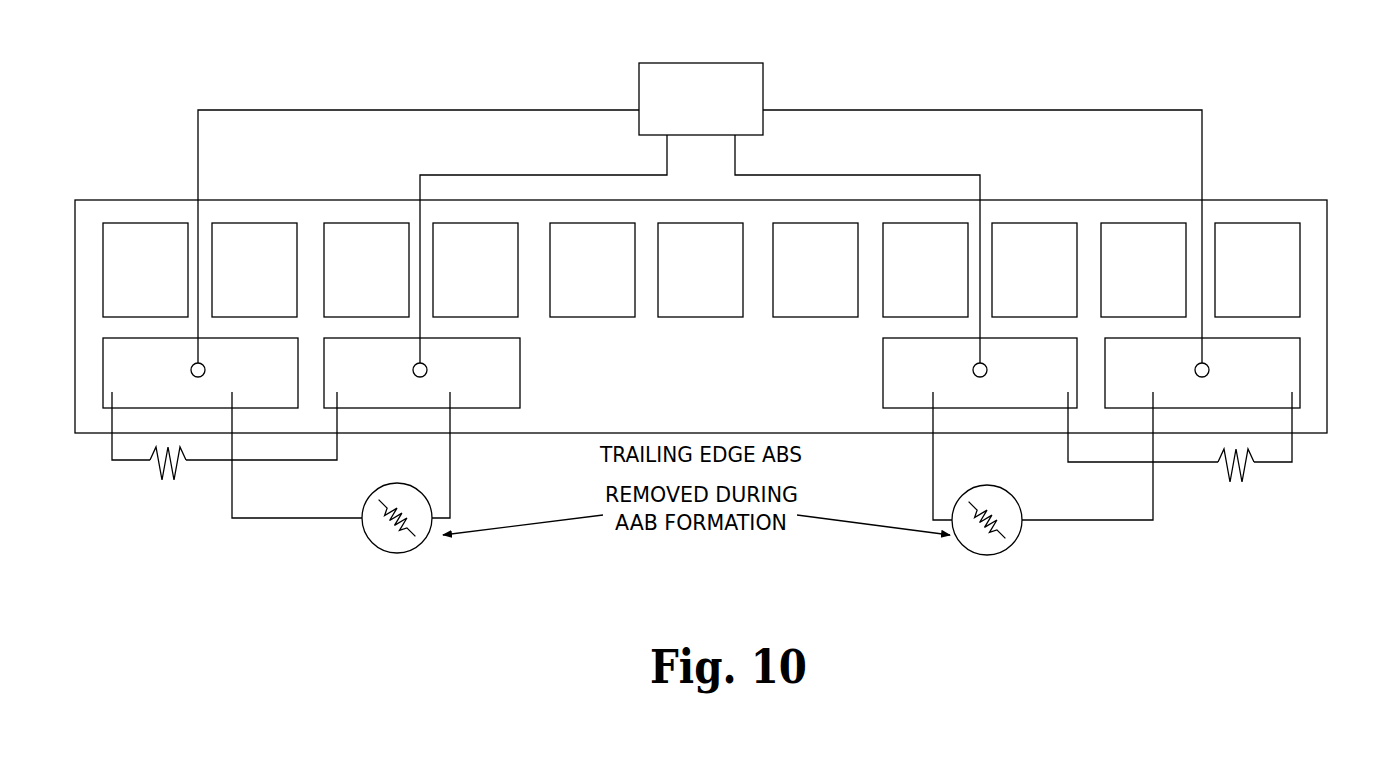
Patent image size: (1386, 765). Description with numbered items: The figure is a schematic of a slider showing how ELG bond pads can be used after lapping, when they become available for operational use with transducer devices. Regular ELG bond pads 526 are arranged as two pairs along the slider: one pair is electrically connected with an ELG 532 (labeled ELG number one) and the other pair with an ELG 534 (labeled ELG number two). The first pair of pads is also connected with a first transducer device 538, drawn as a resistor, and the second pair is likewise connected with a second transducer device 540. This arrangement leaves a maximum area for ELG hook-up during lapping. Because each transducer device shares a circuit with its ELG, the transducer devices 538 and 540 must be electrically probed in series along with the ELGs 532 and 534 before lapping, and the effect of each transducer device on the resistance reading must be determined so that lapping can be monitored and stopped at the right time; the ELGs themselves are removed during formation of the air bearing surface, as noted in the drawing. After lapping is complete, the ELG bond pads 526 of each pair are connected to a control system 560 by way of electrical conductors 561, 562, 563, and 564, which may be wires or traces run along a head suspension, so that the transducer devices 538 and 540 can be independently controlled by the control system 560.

The ELG bond pad 526 is at (112, 378).
The ELG 532 is at (367, 555).
The ELG 534 is at (1018, 558).
The first transducer device 538 is at (170, 482).
The second transducer device 540 is at (1235, 482).
The control system 560 is at (737, 92).
The electrical conductor 561 is at (347, 110).
The electrical conductor 562 is at (503, 175).
The electrical conductor 563 is at (1001, 110).
The electrical conductor 564 is at (887, 175).